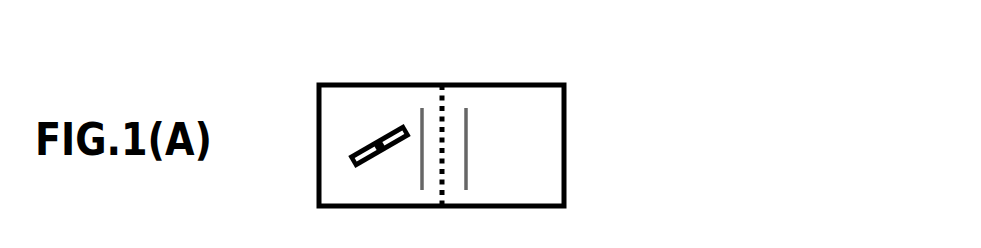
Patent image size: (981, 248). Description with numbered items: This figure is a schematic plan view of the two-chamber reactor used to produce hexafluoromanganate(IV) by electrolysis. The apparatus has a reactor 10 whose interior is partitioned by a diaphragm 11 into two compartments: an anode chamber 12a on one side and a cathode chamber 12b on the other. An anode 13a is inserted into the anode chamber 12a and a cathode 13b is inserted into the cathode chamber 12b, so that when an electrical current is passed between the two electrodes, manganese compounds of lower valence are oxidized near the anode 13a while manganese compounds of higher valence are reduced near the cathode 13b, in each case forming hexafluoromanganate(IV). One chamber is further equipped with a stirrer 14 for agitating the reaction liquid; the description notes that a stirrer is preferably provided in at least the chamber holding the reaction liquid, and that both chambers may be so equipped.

The reactor 10 is at (565, 85).
The diaphragm 11 is at (444, 98).
The anode chamber 12a is at (350, 98).
The cathode chamber 12b is at (517, 98).
The anode 13a is at (422, 108).
The cathode 13b is at (467, 108).
The stirrer 14 is at (350, 157).